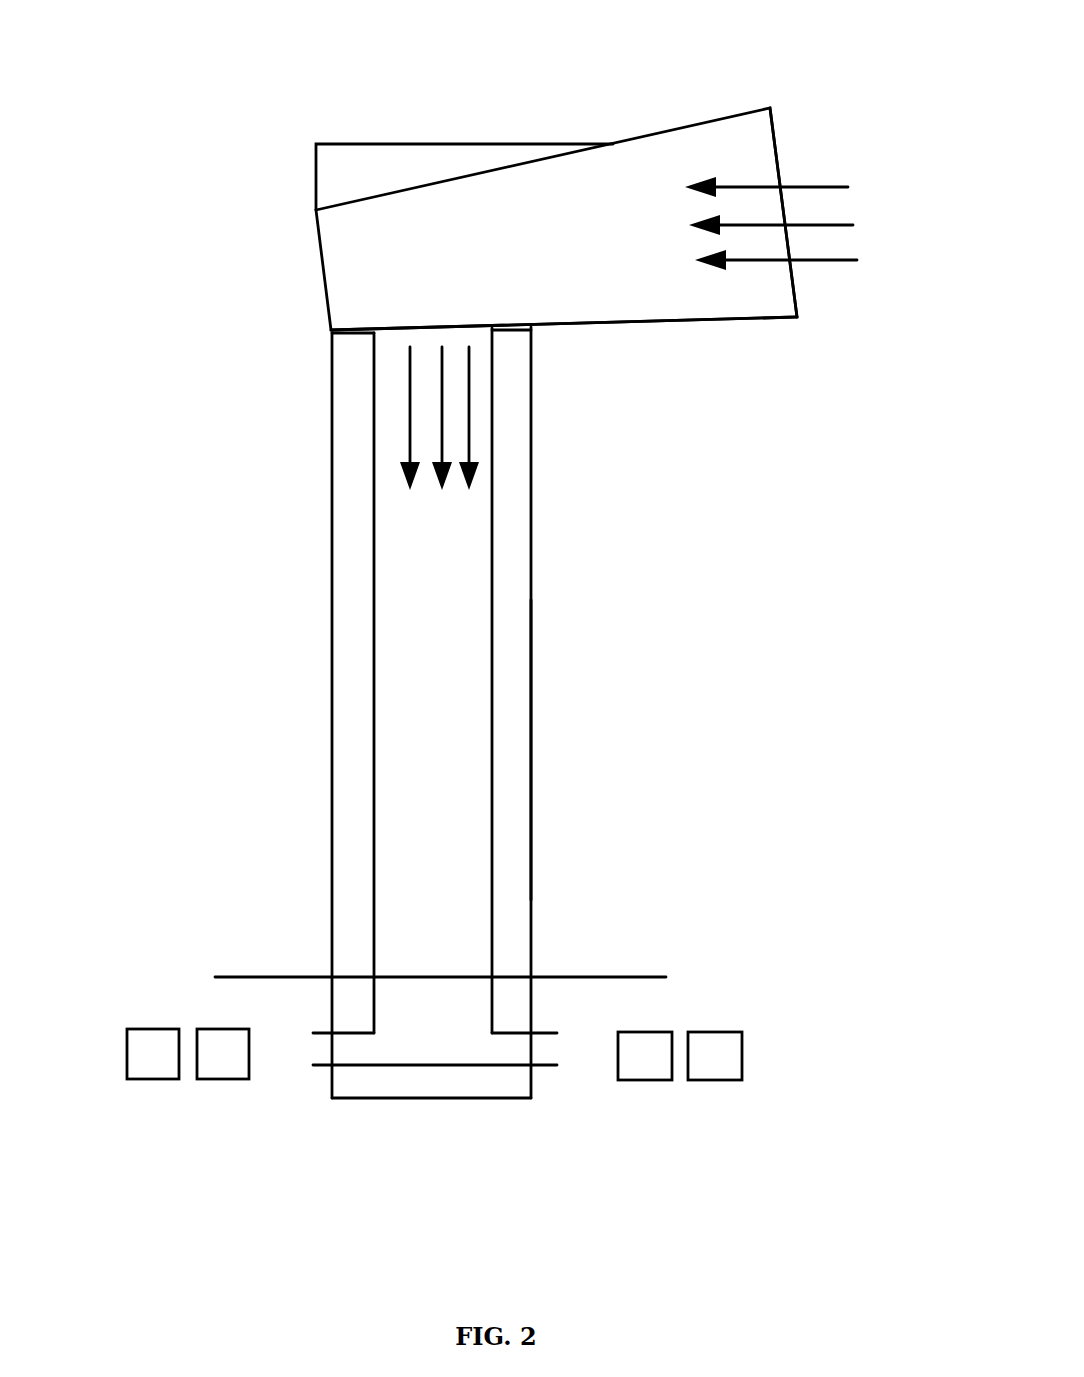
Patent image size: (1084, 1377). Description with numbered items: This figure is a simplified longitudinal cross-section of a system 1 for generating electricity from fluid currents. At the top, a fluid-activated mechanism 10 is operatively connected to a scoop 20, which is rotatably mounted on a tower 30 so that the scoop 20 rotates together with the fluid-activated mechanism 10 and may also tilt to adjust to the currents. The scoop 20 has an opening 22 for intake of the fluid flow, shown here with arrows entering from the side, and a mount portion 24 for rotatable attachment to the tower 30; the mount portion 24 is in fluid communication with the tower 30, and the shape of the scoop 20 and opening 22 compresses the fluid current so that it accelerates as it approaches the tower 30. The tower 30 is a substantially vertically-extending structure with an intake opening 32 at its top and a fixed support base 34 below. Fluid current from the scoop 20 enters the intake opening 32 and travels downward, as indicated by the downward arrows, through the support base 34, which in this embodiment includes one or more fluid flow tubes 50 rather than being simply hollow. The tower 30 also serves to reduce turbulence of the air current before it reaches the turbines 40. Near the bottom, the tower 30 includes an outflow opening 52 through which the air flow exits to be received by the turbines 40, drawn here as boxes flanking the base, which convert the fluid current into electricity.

The system for generating electricity 1 is at (232, 448).
The fluid-activated mechanism 10 is at (430, 162).
The scoop 20 is at (632, 177).
The opening 22 is at (797, 290).
The mount portion 24 is at (385, 330).
The tower 30 is at (512, 638).
The intake opening 32 is at (492, 330).
The support base 34 is at (532, 727).
The turbines 40 is at (138, 1079).
The fluid flow tubes 50 is at (492, 505).
The outflow opening 52 is at (317, 1052).